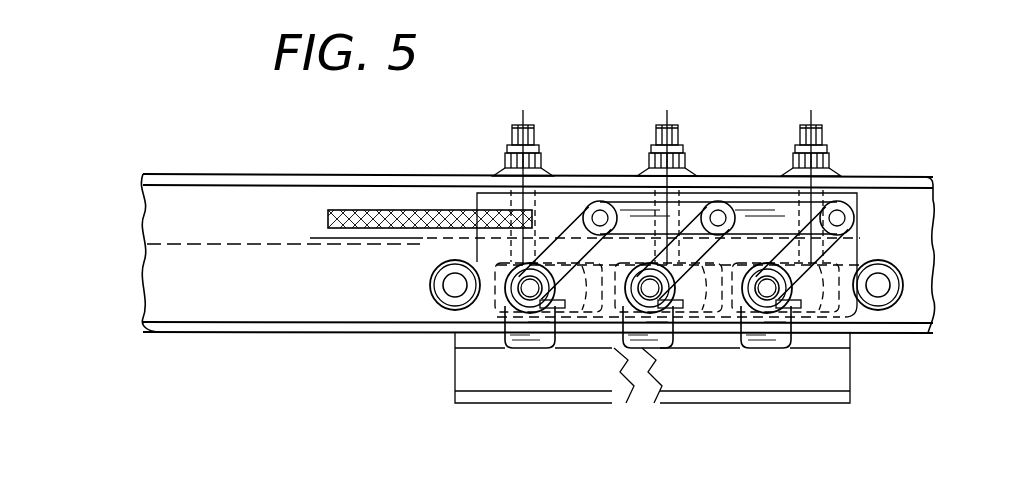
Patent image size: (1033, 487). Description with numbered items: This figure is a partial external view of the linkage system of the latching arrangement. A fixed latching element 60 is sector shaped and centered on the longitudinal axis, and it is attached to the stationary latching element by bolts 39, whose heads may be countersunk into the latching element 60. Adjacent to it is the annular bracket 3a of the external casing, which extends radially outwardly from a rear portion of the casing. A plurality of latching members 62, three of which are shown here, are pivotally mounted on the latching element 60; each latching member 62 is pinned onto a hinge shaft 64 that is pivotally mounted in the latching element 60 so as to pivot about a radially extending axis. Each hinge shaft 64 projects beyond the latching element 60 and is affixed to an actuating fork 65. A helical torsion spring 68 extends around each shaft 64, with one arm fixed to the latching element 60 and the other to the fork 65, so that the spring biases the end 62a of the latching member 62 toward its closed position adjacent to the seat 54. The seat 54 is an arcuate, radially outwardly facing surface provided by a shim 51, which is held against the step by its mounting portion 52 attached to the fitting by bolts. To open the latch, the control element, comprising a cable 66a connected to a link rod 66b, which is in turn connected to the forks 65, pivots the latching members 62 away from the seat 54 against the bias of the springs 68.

The annular bracket 3a is at (417, 200).
The cable 66a is at (353, 212).
The fixed latching element 60 is at (733, 116).
The bolts 39 is at (816, 138).
The link rod 66b is at (633, 203).
The actuating fork 65 is at (600, 201).
The helical torsion spring 68 is at (762, 312).
The end of the latching member 62a is at (757, 348).
The hinge shaft 64 is at (778, 312).
The latching member 62 is at (829, 342).
The seat 54 is at (464, 344).
The shim 51 is at (508, 376).
The mounting portion 52 is at (573, 392).